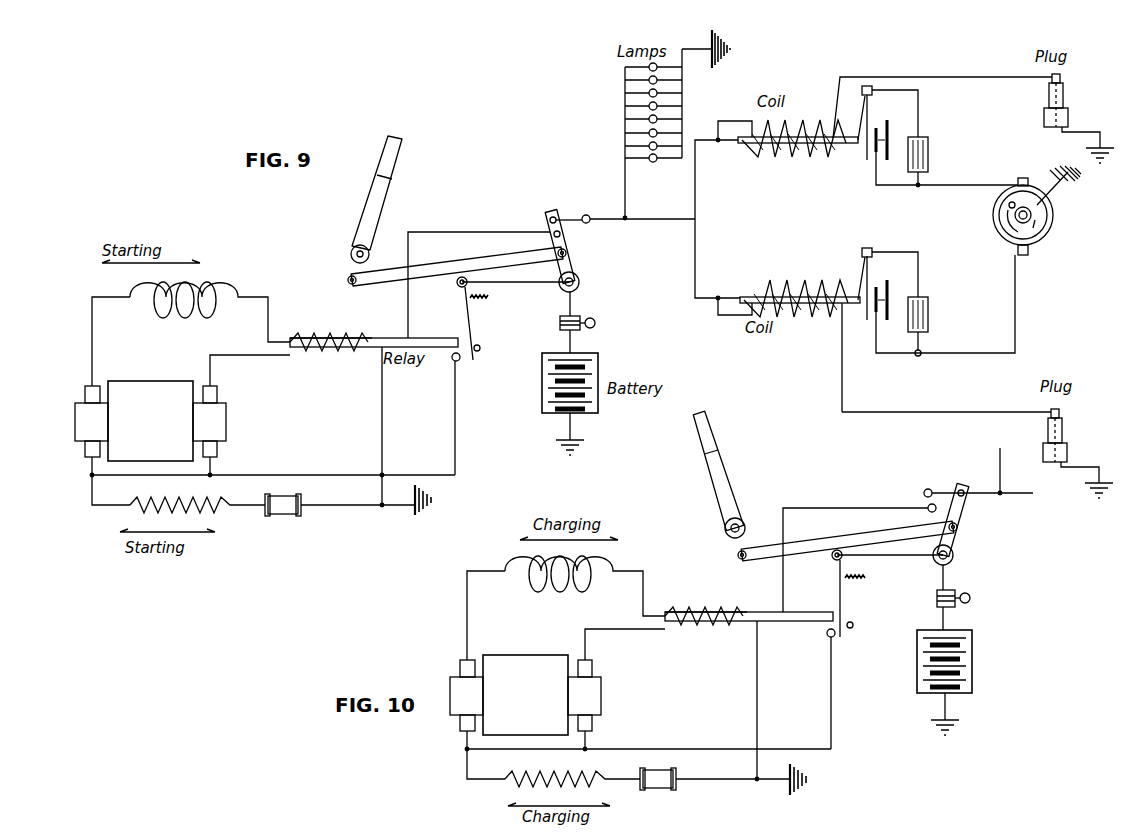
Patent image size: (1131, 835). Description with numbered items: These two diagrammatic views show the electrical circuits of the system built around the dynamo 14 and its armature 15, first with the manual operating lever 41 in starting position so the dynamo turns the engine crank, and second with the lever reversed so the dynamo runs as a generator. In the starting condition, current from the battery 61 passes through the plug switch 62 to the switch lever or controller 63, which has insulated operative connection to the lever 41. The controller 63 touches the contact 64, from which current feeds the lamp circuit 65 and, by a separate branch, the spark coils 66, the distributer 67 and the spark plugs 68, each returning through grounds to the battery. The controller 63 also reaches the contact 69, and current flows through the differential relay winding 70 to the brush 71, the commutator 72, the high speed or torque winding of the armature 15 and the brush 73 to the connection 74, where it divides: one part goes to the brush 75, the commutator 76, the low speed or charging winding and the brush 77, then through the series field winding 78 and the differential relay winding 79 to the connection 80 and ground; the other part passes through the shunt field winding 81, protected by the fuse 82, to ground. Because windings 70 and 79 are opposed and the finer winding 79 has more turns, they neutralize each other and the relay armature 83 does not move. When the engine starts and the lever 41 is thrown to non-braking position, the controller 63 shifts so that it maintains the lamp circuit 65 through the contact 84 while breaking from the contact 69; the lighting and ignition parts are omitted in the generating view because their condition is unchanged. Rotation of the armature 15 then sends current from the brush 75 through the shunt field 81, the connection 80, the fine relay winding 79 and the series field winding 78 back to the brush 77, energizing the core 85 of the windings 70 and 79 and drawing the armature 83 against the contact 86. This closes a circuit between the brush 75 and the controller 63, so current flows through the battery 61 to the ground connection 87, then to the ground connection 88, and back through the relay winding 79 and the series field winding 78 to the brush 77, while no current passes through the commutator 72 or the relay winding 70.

In FIG. 9, the dynamo 14 is at (150, 407).
In FIG. 10, the dynamo 14 is at (525, 684).
In FIG. 9, the armature 15 is at (151, 436).
In FIG. 10, the armature 15 is at (526, 710).
In FIG. 9, the manual operating lever 41 is at (366, 226).
In FIG. 10, the manual operating lever 41 is at (723, 489).
In FIG. 9, the battery 61 is at (542, 388).
In FIG. 10, the battery 61 is at (973, 658).
In FIG. 9, the plug switch 62 is at (581, 318).
In FIG. 10, the plug switch 62 is at (972, 599).
In FIG. 9, the switch lever or controller 63 is at (549, 210).
In FIG. 10, the switch lever or controller 63 is at (962, 513).
In FIG. 9, the contact 64 is at (548, 221).
In FIG. 10, the contact 64 is at (925, 490).
In FIG. 9, the lamp circuit 65 is at (625, 128).
In FIG. 9, the spark coils 66 is at (784, 290).
In FIG. 9, the distributer 67 is at (1006, 222).
In FIG. 9, the spark plugs 68 is at (1048, 101).
In FIG. 10, the spark plugs 68 is at (1066, 430).
In FIG. 9, the contact 69 is at (566, 236).
In FIG. 10, the contact 69 is at (928, 507).
In FIG. 9, the differential relay winding 70 is at (337, 342).
In FIG. 10, the differential relay winding 70 is at (706, 644).
In FIG. 9, the brush 71 is at (218, 395).
In FIG. 10, the brush 71 is at (606, 670).
In FIG. 9, the commutator 72 is at (226, 413).
In FIG. 10, the commutator 72 is at (606, 696).
In FIG. 9, the brush 73 is at (218, 448).
In FIG. 10, the brush 73 is at (609, 728).
In FIG. 9, the connection 74 is at (92, 476).
In FIG. 10, the connection 74 is at (628, 761).
In FIG. 9, the brush 75 is at (86, 452).
In FIG. 10, the brush 75 is at (441, 739).
In FIG. 9, the commutator 76 is at (76, 412).
In FIG. 10, the commutator 76 is at (445, 693).
In FIG. 9, the brush 77 is at (85, 393).
In FIG. 10, the brush 77 is at (449, 658).
In FIG. 9, the series field winding 78 is at (162, 318).
In FIG. 10, the series field winding 78 is at (566, 608).
In FIG. 9, the differential relay winding 79 is at (330, 348).
In FIG. 10, the differential relay winding 79 is at (704, 598).
In FIG. 9, the connection 80 is at (382, 505).
In FIG. 10, the connection 80 is at (773, 723).
In FIG. 9, the shunt field winding 81 is at (225, 506).
In FIG. 10, the shunt field winding 81 is at (548, 796).
In FIG. 9, the fuse 82 is at (287, 512).
In FIG. 10, the fuse 82 is at (715, 795).
In FIG. 9, the armature 83 is at (474, 322).
In FIG. 10, the armature 83 is at (843, 612).
In FIG. 9, the contact 84 is at (587, 214).
In FIG. 10, the contact 84 is at (958, 490).
In FIG. 9, the core 85 is at (436, 338).
In FIG. 10, the core 85 is at (749, 604).
In FIG. 9, the contact 86 is at (454, 362).
In FIG. 10, the contact 86 is at (816, 689).
In FIG. 10, the ground connection 87 is at (957, 731).
In FIG. 10, the ground connection 88 is at (835, 781).